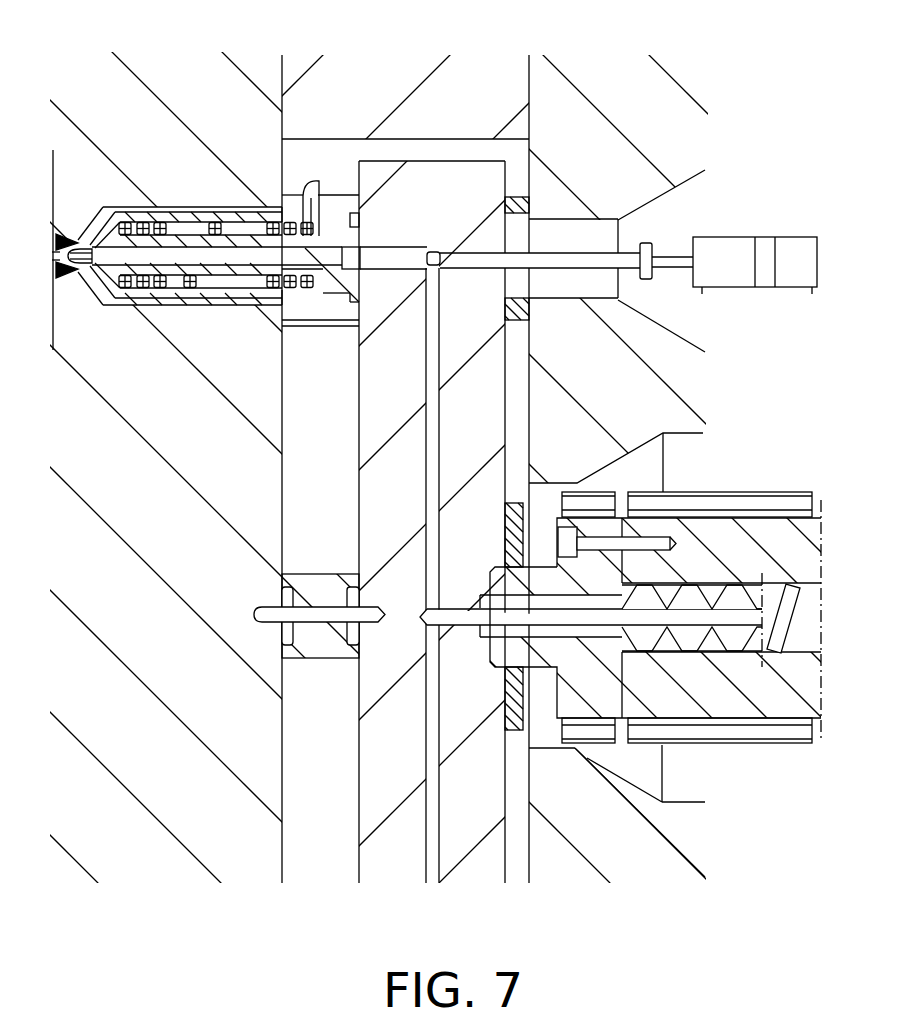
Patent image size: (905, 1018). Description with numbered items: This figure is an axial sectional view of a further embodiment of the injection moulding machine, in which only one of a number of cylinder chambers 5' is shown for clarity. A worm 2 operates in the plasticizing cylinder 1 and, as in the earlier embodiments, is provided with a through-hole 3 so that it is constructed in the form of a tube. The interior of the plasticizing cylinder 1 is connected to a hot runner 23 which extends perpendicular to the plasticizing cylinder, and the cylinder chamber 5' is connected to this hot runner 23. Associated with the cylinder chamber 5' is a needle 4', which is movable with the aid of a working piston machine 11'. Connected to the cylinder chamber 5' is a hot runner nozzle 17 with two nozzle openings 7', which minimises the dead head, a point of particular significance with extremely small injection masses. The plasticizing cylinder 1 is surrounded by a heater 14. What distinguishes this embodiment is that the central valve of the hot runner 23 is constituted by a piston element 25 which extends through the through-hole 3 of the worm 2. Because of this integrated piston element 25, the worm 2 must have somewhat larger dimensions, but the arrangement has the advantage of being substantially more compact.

The plasticizing cylinder 1 is at (805, 552).
The worm 2 is at (638, 632).
The through-hole 3 is at (740, 632).
The needle 4' is at (613, 199).
The cylinder chamber 5' is at (266, 134).
The nozzle openings 7' is at (54, 252).
The working piston machine 11' is at (763, 298).
The heater 14 is at (600, 490).
The hot runner nozzle 17 is at (193, 225).
The hot runner 23 is at (428, 877).
The piston element 25 is at (463, 622).